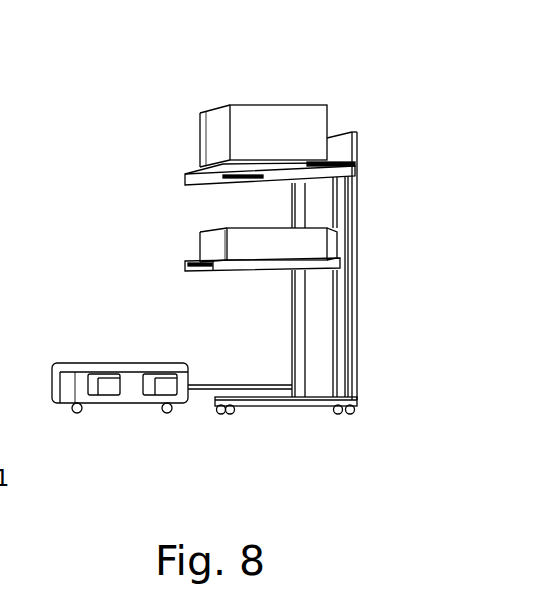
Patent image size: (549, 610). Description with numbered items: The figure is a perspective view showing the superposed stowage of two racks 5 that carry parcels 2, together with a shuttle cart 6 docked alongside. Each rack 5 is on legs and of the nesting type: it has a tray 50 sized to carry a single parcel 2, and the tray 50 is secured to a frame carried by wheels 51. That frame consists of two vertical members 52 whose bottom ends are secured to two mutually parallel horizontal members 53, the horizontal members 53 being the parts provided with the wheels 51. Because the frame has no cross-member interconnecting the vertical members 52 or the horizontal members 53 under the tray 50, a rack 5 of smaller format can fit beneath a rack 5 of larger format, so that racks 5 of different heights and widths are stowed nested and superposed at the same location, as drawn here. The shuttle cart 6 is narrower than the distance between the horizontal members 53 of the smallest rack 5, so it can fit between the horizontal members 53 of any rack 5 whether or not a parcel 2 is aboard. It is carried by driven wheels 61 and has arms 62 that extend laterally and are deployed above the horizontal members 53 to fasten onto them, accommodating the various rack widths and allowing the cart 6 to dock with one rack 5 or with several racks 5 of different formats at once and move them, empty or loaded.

The parcel 2 is at (277, 127).
The rack 5 is at (367, 159).
The tray 50 is at (200, 172).
The wheels 51 is at (228, 416).
The vertical members 52 is at (0, 223).
The horizontal members 53 is at (248, 385).
The shuttle cart 6 is at (88, 340).
The driven wheels 61 is at (78, 413).
The arms 62 is at (107, 375).